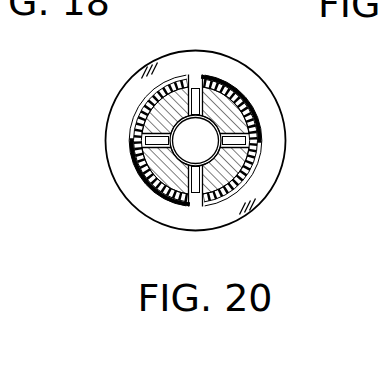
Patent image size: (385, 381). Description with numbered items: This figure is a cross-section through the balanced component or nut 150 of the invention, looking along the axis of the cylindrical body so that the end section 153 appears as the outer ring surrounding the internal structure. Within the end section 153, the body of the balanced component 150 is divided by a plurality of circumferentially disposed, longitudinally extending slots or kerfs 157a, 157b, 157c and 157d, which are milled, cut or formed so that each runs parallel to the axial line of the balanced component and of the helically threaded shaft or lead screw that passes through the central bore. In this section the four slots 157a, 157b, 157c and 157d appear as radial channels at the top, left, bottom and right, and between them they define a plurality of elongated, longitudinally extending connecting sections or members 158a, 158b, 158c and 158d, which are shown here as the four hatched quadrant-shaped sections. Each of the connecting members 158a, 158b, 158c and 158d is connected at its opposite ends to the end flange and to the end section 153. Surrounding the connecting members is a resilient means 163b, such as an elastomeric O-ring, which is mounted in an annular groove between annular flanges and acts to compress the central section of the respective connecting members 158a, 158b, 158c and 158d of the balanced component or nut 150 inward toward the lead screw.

The balanced component or nut 150 is at (203, 119).
The end section 153 is at (170, 62).
The slot or kerf 157a is at (194, 77).
The slot or kerf 157b is at (142, 140).
The slot or kerf 157c is at (190, 193).
The slot or kerf 157d is at (228, 138).
The connecting section or member 158a is at (140, 106).
The connecting section or member 158b is at (165, 184).
The connecting section or member 158c is at (238, 176).
The connecting section or member 158d is at (243, 107).
The resilient means 163b is at (222, 90).